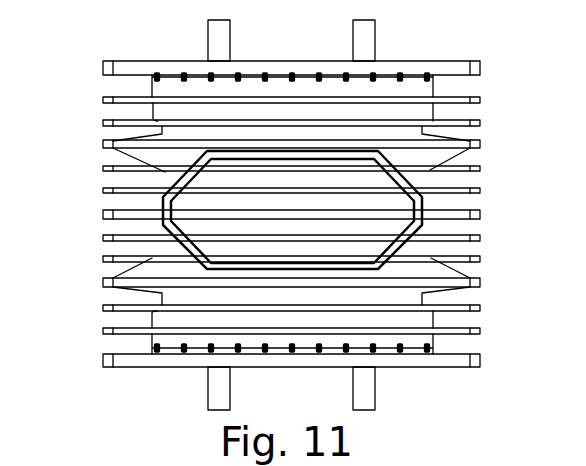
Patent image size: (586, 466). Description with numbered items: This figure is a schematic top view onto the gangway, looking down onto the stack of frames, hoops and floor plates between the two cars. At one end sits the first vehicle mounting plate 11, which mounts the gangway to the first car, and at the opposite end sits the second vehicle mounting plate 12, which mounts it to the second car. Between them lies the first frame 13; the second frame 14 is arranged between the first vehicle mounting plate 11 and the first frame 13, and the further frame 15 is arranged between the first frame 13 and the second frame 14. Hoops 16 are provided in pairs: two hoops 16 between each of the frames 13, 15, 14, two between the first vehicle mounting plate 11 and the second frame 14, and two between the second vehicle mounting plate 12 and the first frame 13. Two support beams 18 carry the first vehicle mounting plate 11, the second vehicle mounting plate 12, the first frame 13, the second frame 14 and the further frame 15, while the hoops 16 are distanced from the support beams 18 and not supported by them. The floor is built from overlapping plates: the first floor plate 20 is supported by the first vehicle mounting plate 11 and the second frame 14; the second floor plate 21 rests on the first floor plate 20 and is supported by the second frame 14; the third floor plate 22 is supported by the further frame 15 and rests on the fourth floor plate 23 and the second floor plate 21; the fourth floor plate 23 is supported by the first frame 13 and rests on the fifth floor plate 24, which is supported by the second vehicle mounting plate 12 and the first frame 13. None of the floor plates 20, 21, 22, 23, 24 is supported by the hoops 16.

The first vehicle mounting plate 11 is at (482, 360).
The second vehicle mounting plate 12 is at (482, 68).
The first frame 13 is at (482, 144).
The second frame 14 is at (482, 282).
The further frame 15 is at (482, 214).
The hoops 16 is at (482, 100).
The support beams 18 is at (222, 38).
The first floor plate 20 is at (163, 343).
The second floor plate 21 is at (170, 295).
The third floor plate 22 is at (187, 230).
The fourth floor plate 23 is at (170, 162).
The fifth floor plate 24 is at (168, 108).